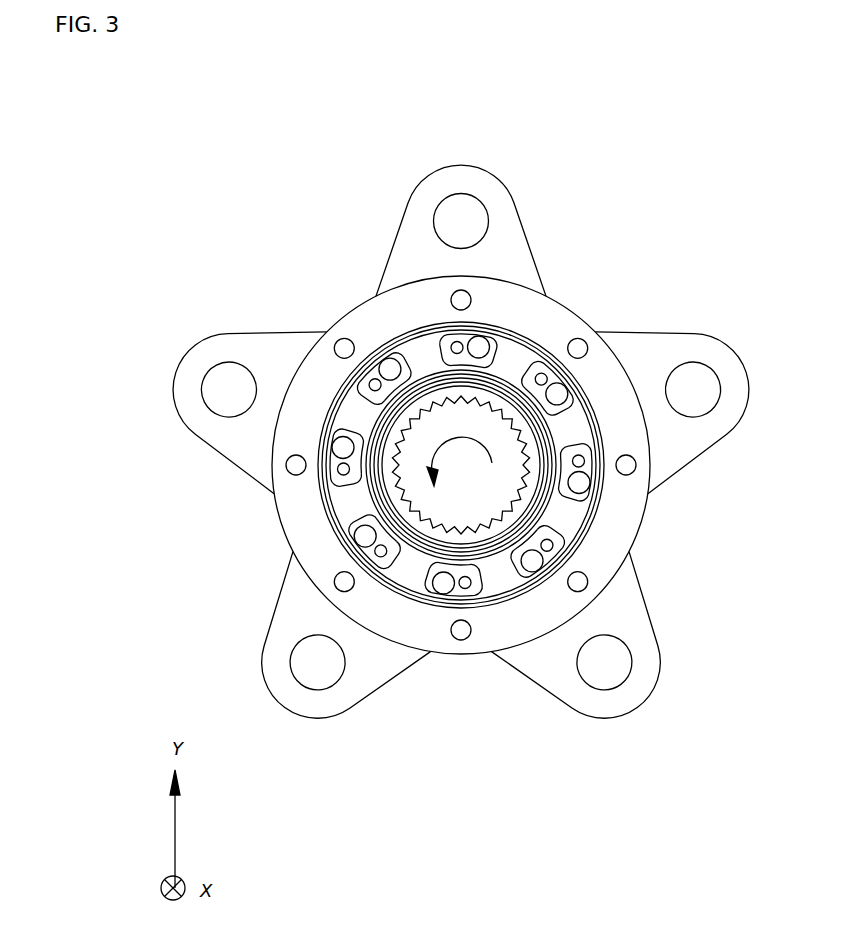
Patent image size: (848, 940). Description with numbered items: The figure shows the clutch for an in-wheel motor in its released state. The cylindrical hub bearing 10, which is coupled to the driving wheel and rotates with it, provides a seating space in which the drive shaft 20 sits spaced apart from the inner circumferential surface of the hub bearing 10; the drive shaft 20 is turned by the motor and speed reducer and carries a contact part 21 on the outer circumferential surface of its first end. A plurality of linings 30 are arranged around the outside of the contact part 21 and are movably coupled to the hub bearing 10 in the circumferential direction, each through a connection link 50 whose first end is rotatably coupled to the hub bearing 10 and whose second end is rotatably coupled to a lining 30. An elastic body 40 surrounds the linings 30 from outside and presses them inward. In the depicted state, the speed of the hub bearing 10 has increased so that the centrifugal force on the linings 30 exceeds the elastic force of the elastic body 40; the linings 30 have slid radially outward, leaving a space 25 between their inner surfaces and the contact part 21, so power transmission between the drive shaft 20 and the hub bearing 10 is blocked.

The hub bearing 10 is at (558, 320).
The drive shaft 20 is at (517, 522).
The contact part 21 is at (478, 386).
The space 25 is at (550, 447).
The lining 30 is at (393, 547).
The elastic body 40 is at (327, 528).
The connection link 50 is at (468, 326).